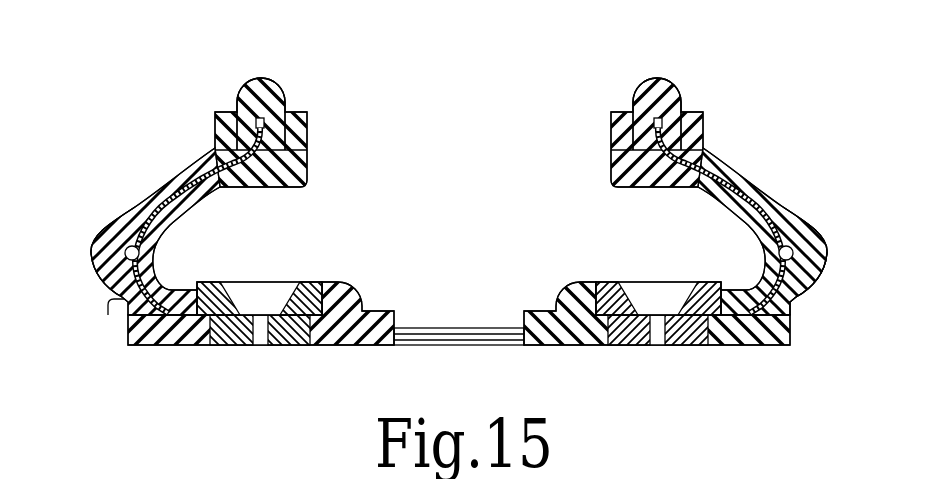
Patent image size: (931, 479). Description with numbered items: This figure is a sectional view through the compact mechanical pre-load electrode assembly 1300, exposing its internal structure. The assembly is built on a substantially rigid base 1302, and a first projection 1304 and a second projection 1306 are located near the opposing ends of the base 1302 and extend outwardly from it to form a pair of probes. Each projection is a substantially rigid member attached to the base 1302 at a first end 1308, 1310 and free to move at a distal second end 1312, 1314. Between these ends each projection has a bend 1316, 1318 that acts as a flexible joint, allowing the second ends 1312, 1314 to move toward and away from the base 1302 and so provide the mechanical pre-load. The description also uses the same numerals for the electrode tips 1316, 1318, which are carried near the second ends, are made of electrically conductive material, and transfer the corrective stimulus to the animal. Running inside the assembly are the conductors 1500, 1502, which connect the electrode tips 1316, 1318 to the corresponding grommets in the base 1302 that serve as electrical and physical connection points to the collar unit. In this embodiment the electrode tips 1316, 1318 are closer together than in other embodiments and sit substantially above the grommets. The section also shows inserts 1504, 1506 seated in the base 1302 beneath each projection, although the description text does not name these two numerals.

The compact mechanical pre-load electrode assembly 1300 is at (152, 370).
The base 1302 is at (550, 334).
The first projection 1304 is at (178, 180).
The second projection 1306 is at (792, 212).
The first end of first projection 1308 is at (124, 291).
The first end of second projection 1310 is at (802, 308).
The second end of first projection 1312 is at (309, 183).
The second end of second projection 1314 is at (610, 183).
The bend (electrode tip) 1316 is at (258, 82).
The bend (electrode tip) 1318 is at (657, 80).
The conductor 1500 is at (210, 189).
The conductor 1502 is at (699, 188).
The left cavity insert 1504 is at (316, 282).
The right cavity insert 1506 is at (685, 283).